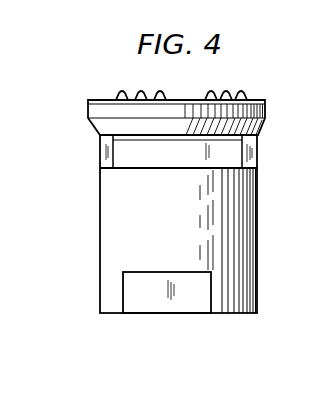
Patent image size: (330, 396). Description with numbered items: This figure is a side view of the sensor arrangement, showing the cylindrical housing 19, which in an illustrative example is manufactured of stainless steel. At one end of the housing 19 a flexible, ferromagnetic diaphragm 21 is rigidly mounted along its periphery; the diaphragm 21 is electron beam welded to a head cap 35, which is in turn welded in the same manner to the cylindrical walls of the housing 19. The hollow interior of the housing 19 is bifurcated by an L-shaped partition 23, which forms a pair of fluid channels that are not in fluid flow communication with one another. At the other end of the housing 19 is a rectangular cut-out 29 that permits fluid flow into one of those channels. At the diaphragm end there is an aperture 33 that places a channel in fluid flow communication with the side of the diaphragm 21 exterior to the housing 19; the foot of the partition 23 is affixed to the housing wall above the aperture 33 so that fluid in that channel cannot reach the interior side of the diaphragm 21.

The cylindrical housing 19 is at (101, 222).
The flexible diaphragm 21 is at (206, 96).
The L-shaped partition 23 is at (160, 297).
The rectangular cut-out 29 is at (150, 272).
The aperture 33 is at (128, 151).
The head cap 35 is at (266, 110).